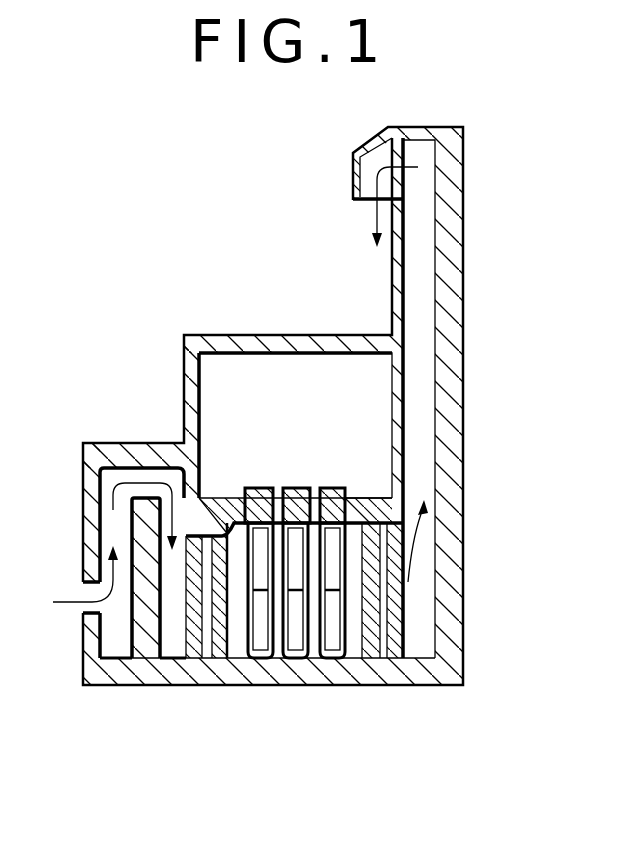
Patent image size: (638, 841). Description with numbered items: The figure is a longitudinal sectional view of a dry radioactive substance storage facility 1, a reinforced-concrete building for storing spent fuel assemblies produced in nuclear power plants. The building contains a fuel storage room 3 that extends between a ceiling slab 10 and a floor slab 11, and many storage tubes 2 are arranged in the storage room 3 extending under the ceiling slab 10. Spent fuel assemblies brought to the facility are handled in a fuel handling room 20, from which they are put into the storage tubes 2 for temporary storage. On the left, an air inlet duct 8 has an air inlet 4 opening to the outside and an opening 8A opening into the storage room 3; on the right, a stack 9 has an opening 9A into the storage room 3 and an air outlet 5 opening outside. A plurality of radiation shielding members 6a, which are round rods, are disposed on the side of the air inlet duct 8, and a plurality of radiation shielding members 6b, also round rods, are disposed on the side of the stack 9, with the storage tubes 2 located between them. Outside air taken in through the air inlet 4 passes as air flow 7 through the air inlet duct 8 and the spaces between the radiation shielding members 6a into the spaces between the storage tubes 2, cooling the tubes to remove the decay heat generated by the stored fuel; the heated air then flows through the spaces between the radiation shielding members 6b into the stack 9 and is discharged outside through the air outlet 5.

The dry radioactive substance storage facility 1 is at (165, 448).
The storage tubes 2 is at (260, 640).
The fuel storage room 3 is at (355, 647).
The air inlet 4 is at (83, 590).
The air outlet 5 is at (367, 200).
The radiation shielding members 6a is at (186, 643).
The radiation shielding members 6b is at (393, 650).
The air flow 7 is at (63, 607).
The air inlet duct 8 is at (122, 477).
The opening 8A is at (177, 493).
The stack 9 is at (418, 313).
The opening 9A is at (412, 518).
The ceiling slab 10 is at (370, 503).
The floor slab 11 is at (307, 668).
The fuel handling room 20 is at (251, 368).